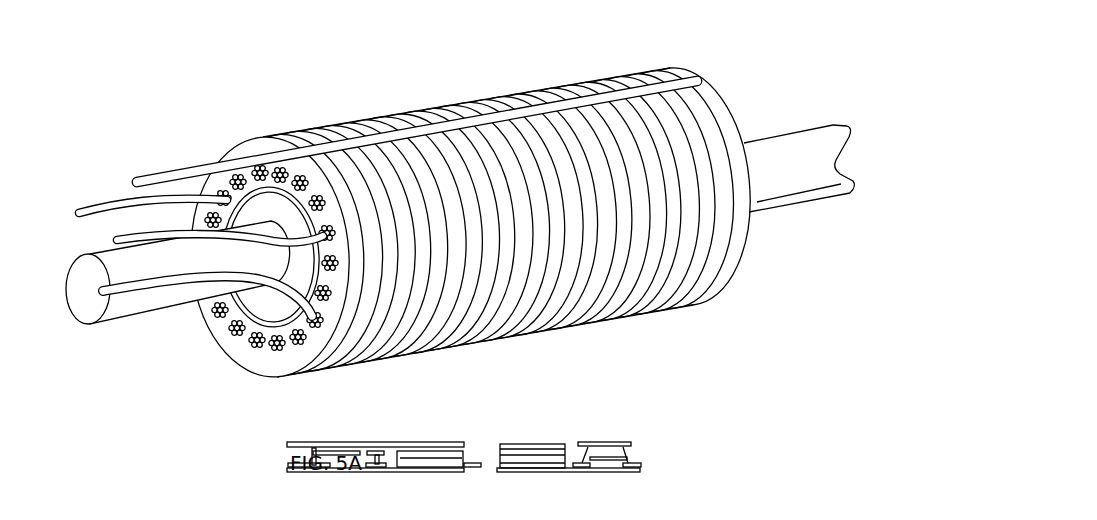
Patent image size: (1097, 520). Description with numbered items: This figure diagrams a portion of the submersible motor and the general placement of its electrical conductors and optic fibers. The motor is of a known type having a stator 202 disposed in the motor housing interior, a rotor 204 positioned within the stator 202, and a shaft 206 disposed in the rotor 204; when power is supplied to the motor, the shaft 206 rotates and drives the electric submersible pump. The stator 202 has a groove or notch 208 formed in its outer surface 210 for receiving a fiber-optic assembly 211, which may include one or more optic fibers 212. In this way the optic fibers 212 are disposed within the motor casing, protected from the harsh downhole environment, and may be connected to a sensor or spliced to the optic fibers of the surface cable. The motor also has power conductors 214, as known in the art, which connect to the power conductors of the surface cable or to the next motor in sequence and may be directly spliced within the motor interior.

The stator 202 is at (687, 272).
The rotor 204 is at (248, 322).
The shaft 206 is at (122, 313).
The groove or notch 208 is at (675, 92).
The outer surface 210 is at (717, 162).
The fiber-optic assembly 211 is at (281, 214).
The optic fibers 212 is at (238, 163).
The power conductors 214 is at (143, 233).